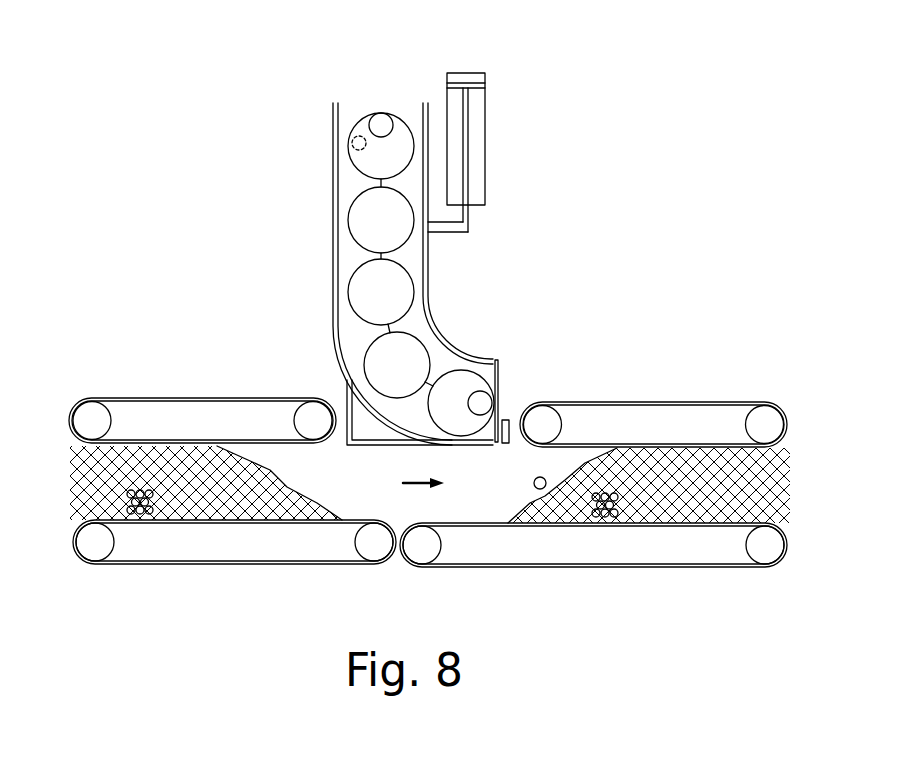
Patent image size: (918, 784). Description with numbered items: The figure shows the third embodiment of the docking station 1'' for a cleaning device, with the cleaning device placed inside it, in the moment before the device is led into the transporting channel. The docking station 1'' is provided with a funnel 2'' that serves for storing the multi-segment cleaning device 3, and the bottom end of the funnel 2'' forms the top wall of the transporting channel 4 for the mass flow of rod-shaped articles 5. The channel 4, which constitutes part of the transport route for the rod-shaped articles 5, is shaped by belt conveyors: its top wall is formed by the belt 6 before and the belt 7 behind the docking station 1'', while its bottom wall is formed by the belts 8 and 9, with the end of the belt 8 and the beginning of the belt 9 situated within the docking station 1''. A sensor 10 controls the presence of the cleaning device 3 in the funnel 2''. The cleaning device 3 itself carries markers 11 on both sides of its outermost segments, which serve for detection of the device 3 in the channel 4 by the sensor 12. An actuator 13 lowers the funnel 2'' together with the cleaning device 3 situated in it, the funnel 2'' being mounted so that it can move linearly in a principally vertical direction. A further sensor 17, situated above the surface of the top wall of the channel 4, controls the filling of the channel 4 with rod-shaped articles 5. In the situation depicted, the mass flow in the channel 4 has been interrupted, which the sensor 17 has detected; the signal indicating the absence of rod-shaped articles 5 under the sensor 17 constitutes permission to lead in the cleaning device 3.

The docking station 1'' is at (550, 207).
The funnel 2'' is at (348, 274).
The multi-segment cleaning device 3 is at (357, 223).
The transporting channel 4 is at (340, 487).
The rod-shaped articles 5 is at (604, 520).
The belt 6 is at (167, 398).
The belt 7 is at (690, 402).
The belt 8 is at (140, 565).
The belt 9 is at (650, 567).
The sensor 10 is at (352, 141).
The markers 11 is at (383, 120).
The sensor 12 is at (536, 489).
The actuator 13 is at (477, 142).
The sensor 17 is at (509, 427).